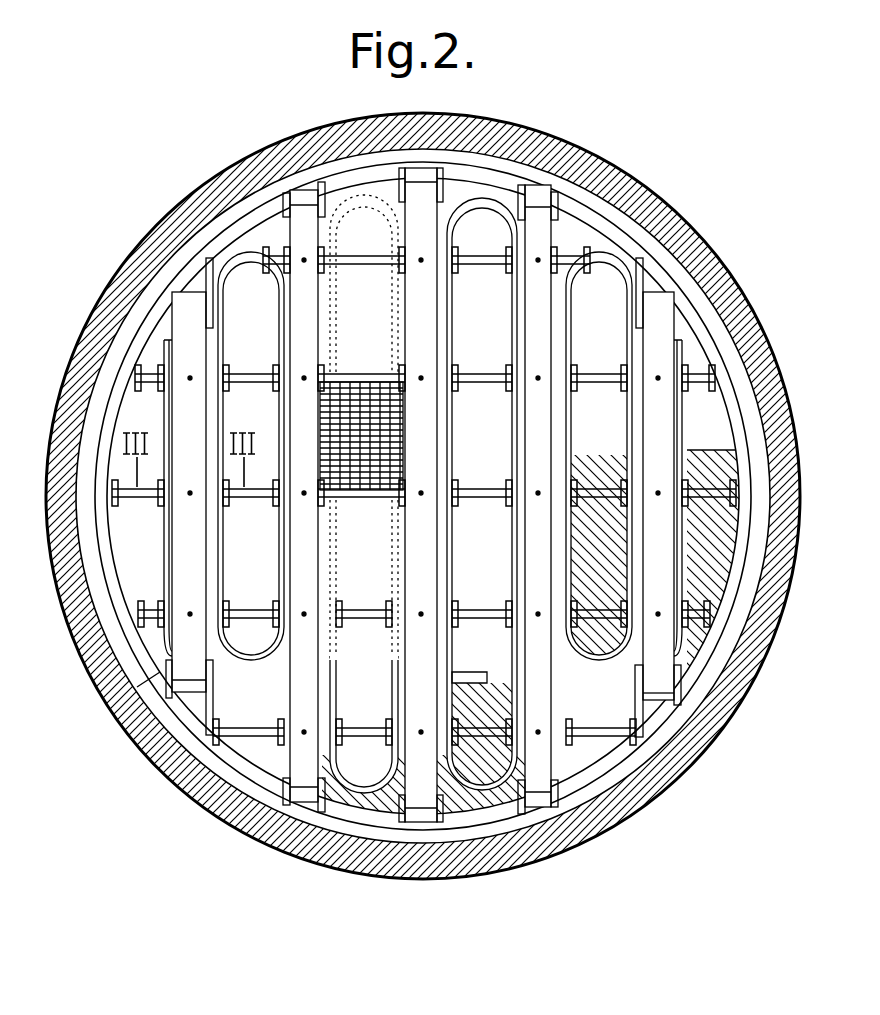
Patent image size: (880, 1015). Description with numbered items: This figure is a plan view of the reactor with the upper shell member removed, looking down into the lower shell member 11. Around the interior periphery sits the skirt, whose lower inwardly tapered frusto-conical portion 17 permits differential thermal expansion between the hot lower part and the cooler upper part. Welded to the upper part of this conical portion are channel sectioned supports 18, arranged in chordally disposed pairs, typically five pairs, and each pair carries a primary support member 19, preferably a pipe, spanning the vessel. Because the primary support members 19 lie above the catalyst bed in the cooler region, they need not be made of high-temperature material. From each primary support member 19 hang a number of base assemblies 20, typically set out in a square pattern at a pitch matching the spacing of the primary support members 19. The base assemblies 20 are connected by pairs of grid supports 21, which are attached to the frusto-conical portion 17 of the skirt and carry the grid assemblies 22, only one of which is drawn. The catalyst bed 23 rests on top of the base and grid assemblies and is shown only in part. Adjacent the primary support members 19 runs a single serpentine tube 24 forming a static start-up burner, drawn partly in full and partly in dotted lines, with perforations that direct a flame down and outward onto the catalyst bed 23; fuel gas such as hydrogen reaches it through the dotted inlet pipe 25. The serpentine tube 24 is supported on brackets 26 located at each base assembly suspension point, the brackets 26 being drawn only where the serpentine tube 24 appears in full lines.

The lower shell member 11 is at (140, 265).
The frusto-conical portion 17 is at (240, 210).
The channel sectioned supports 18 is at (302, 195).
The primary support member 19 is at (320, 344).
The base assemblies 20 is at (332, 612).
The grid supports 21 is at (455, 507).
The grid assemblies 22 is at (407, 450).
The catalyst bed 23 is at (612, 470).
The serpentine tube 24 is at (137, 687).
The inlet pipe 25 is at (460, 678).
The brackets 26 is at (160, 357).